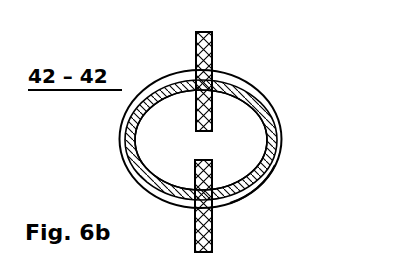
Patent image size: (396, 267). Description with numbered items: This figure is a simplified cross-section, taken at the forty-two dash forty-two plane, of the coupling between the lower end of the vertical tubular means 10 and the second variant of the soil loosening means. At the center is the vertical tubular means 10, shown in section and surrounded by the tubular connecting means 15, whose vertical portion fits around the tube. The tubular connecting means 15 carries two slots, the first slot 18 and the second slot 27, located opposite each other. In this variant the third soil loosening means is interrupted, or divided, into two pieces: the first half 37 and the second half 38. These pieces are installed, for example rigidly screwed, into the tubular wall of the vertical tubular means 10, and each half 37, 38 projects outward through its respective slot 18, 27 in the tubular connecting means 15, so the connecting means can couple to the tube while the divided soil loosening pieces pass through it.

The vertical tubular means 10 is at (233, 134).
The tubular connecting means 15 is at (278, 147).
The first slot 18 is at (252, 196).
The second slot 27 is at (258, 98).
The first half of the third soil loosening means 37 is at (213, 64).
The second half of the third soil loosening means 38 is at (213, 232).